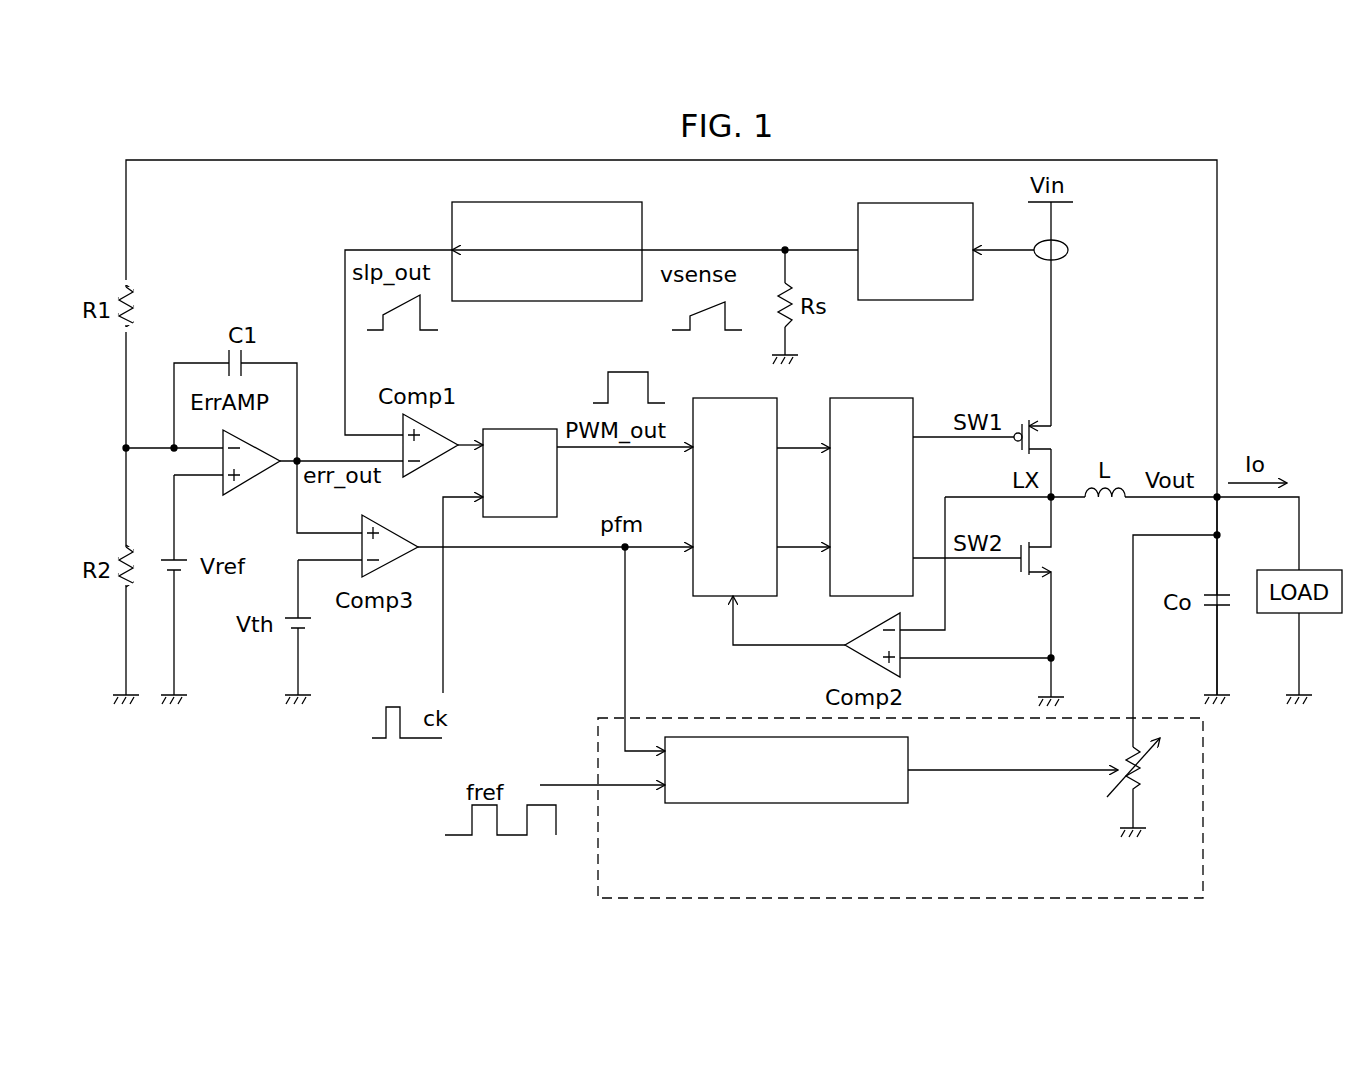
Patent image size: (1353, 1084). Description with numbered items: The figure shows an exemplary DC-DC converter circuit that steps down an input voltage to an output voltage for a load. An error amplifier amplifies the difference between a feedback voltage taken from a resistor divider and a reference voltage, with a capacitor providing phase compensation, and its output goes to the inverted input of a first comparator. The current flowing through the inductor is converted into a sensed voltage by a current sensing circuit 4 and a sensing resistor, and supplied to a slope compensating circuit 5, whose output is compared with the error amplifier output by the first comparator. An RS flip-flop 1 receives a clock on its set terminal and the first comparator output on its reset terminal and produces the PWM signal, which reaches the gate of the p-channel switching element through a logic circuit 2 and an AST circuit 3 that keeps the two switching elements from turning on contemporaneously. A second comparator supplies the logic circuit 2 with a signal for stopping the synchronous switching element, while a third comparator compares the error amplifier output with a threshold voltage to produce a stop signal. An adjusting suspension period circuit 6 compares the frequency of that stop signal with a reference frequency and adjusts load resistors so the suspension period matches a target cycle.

The RS flip-flop 1 is at (527, 429).
The logic circuit 2 is at (735, 398).
The AST circuit 3 is at (897, 398).
The current sensing circuit 4 is at (942, 203).
The slope compensating circuit 5 is at (600, 202).
The adjusting suspension period circuit 6 is at (1205, 826).